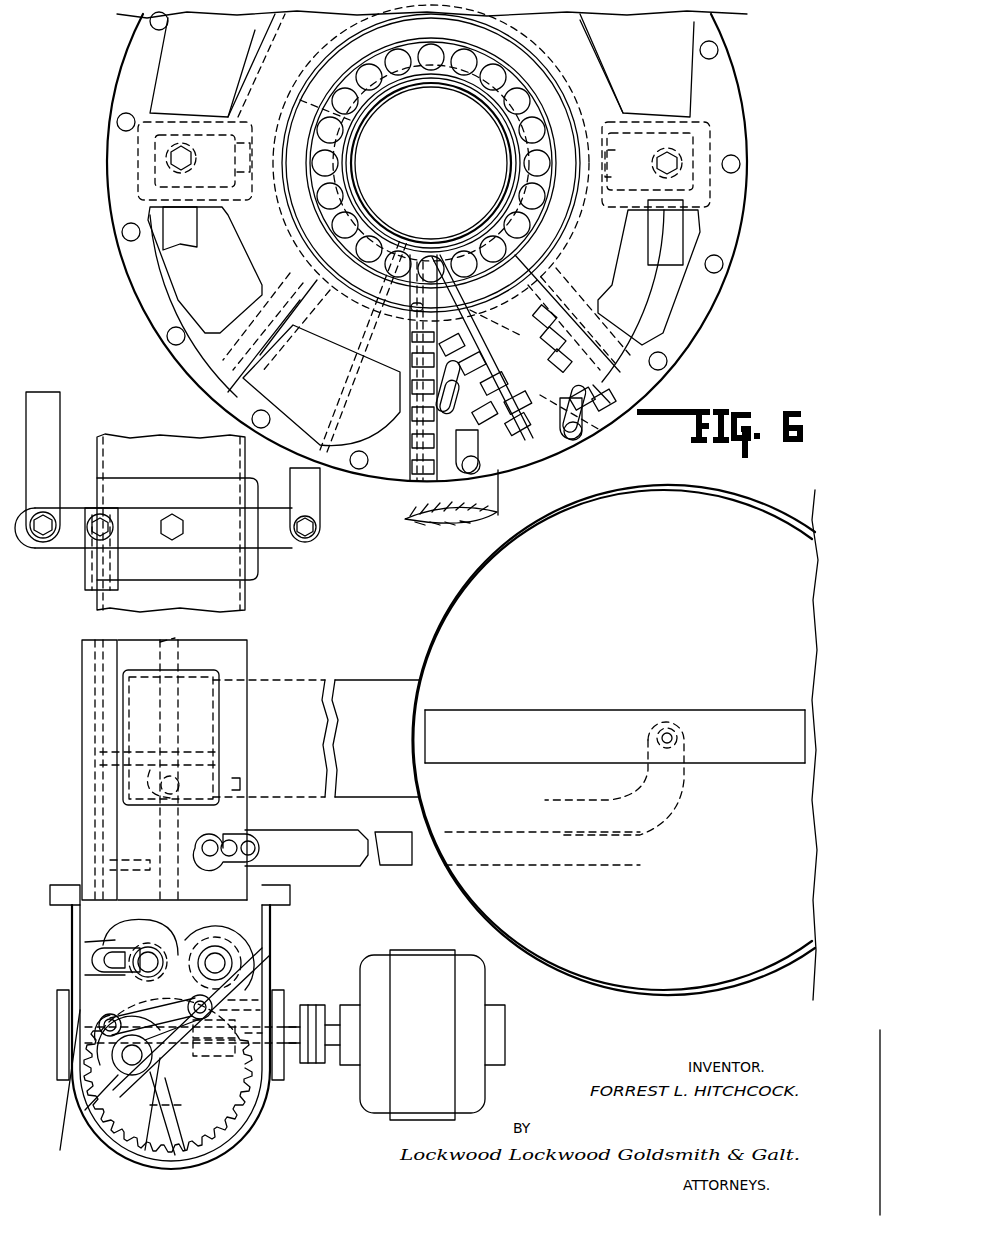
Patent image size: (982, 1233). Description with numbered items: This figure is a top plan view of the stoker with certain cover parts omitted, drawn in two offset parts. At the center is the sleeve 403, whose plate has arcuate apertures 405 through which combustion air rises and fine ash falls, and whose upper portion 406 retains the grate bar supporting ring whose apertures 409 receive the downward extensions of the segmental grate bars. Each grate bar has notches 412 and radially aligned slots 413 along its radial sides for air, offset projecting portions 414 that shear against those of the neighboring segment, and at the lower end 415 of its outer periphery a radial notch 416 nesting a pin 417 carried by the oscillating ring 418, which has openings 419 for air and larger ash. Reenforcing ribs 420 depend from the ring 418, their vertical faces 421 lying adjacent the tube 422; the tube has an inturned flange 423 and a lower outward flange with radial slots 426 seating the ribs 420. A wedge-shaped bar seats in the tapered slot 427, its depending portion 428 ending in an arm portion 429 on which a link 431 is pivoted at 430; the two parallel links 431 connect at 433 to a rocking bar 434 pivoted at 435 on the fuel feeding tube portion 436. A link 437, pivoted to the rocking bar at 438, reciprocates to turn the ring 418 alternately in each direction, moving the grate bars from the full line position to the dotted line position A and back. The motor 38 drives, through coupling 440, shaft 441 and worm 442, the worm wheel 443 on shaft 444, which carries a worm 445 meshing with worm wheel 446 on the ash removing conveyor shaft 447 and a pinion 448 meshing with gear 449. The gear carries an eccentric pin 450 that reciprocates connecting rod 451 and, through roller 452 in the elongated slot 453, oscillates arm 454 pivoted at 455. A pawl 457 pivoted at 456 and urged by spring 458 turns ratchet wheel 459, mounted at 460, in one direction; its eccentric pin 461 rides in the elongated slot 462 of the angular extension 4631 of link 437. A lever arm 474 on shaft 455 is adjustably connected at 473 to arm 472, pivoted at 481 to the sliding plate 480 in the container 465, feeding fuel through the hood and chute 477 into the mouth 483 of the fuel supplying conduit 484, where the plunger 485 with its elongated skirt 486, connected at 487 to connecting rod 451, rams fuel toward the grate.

The motor 38 is at (430, 958).
The sleeve 403 is at (353, 155).
The apertures 405 is at (527, 215).
The upper sleeve portion 406 is at (372, 222).
The apertures 409 is at (458, 72).
The notches 412 is at (530, 262).
The slots 413 is at (478, 440).
The projecting portions 414 is at (600, 378).
The lower end of grate bar outer periphery 415 is at (612, 404).
The radial notch 416 is at (478, 447).
The pin or abutment 417 is at (717, 53).
The oscillating ring 418 is at (690, 333).
The openings 419 is at (185, 293).
The reenforcing ribs 420 is at (436, 325).
The vertical face 421 is at (588, 252).
The tube 422 is at (458, 167).
The inturned flange 423 is at (255, 283).
The radial slots 426 is at (435, 325).
The wedge-shaped tapered slot 427 is at (595, 105).
The vertical depending portion 428 is at (245, 135).
The arm portion 429 is at (160, 188).
The pivot 430 is at (172, 158).
The links 431 is at (172, 230).
The pivotal connection 433 is at (43, 535).
The rocking bar 434 is at (277, 540).
The pivot 435 is at (175, 535).
The fuel feeding tube portion 436 is at (190, 478).
The link 437 is at (85, 585).
The pivotal connection 438 is at (108, 520).
The coupling 440 is at (312, 1003).
The shaft 441 is at (292, 1047).
The worm 442 is at (245, 1075).
The worm wheel 443 is at (255, 990).
The shaft 444 is at (250, 995).
The worm 445 is at (255, 975).
The worm wheel 446 is at (219, 942).
The ash removing conveyor shaft 447 is at (190, 654).
The pinion 448 is at (262, 960).
The gear 449 is at (218, 1125).
The eccentric pin 450 is at (128, 1115).
The connecting rod 451 is at (152, 837).
The roller 452 is at (110, 1090).
The elongated slot 453 is at (150, 1110).
The arm 454 is at (170, 1110).
The pivot shaft 455 is at (235, 985).
The pivot 456 is at (205, 1020).
The pawl 457 is at (150, 1062).
The spring 458 is at (103, 1050).
The ratchet wheel 459 is at (98, 932).
The rotatable mounting 460 is at (125, 960).
The eccentric pin 461 is at (100, 975).
The elongated slot 462 is at (90, 942).
The gear 4631 is at (148, 948).
The container 465 is at (440, 625).
The arm 472 is at (404, 862).
The adjustable connection 473 is at (250, 845).
The lever arm 474 is at (250, 880).
The combination hood and chute 477 is at (340, 690).
The sliding plate 480 is at (733, 757).
The pivotal connection 481 is at (670, 733).
The mouth 483 is at (215, 675).
The fuel supplying conduit 484 is at (415, 512).
The plunger or ram 485 is at (230, 757).
The elongated skirt 486 is at (243, 784).
The connection 487 is at (178, 782).
The dotted line position A is at (240, 402).